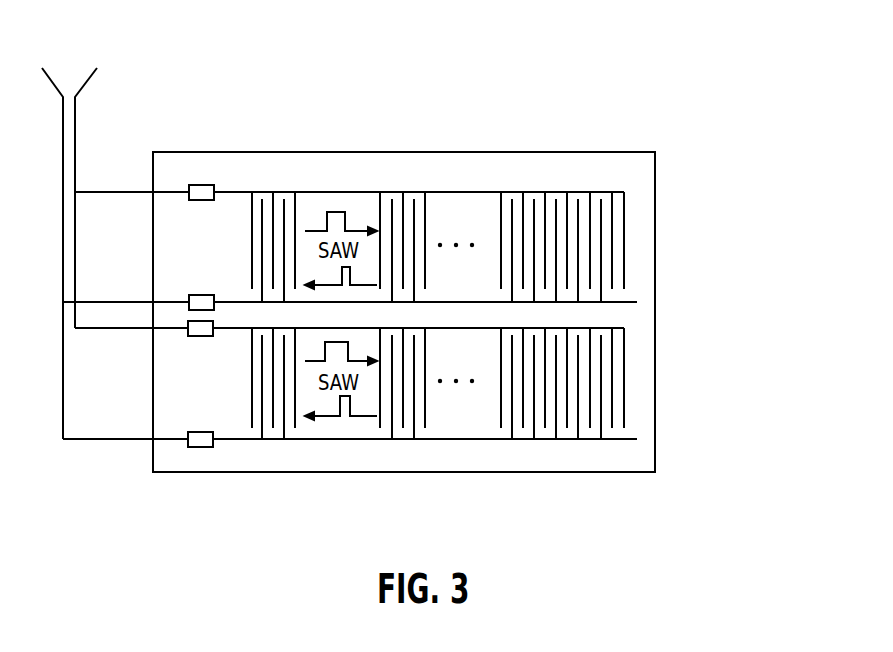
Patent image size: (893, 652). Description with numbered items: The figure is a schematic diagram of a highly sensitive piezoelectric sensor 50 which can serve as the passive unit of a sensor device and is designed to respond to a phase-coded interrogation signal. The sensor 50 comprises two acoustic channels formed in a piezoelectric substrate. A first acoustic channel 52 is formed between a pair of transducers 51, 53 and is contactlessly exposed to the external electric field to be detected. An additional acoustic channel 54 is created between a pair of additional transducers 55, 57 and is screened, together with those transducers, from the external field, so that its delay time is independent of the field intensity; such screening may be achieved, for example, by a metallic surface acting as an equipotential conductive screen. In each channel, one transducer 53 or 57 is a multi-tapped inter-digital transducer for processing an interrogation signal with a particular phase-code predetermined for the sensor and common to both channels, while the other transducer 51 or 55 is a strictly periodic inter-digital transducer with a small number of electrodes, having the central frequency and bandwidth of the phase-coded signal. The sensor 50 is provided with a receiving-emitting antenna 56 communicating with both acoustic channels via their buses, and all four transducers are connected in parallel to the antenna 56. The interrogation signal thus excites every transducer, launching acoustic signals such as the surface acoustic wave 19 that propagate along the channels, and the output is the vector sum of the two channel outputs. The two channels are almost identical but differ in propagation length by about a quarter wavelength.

The piezoelectric sensor 50 is at (727, 288).
The receiving-emitting antenna 56 is at (87, 68).
The transducer 51 is at (240, 240).
The first acoustic channel 52 is at (333, 200).
The acoustic signal 19 is at (456, 262).
The transducer 53 is at (632, 240).
The additional transducer 55 is at (240, 382).
The additional acoustic channel 54 is at (337, 418).
The additional transducer 57 is at (632, 380).